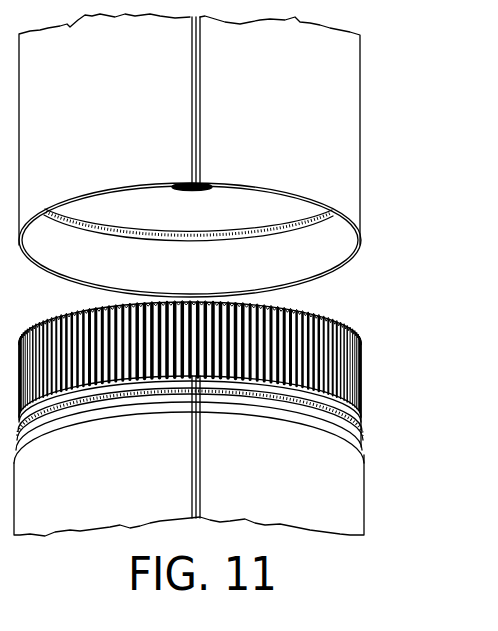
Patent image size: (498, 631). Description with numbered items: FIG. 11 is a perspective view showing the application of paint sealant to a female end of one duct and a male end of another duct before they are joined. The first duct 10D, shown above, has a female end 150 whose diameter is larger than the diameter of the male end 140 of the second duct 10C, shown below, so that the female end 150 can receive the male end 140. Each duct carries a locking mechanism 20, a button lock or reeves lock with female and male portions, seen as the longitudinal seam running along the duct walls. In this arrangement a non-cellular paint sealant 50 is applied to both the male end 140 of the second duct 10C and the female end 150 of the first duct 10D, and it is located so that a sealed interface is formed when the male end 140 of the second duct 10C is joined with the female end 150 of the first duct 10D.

The locking mechanism 20 is at (200, 142).
The first duct 10D is at (370, 183).
The female end 150 is at (308, 280).
The male end 140 is at (360, 390).
The non-cellular paint sealant 50 is at (362, 435).
The second duct 10C is at (374, 500).